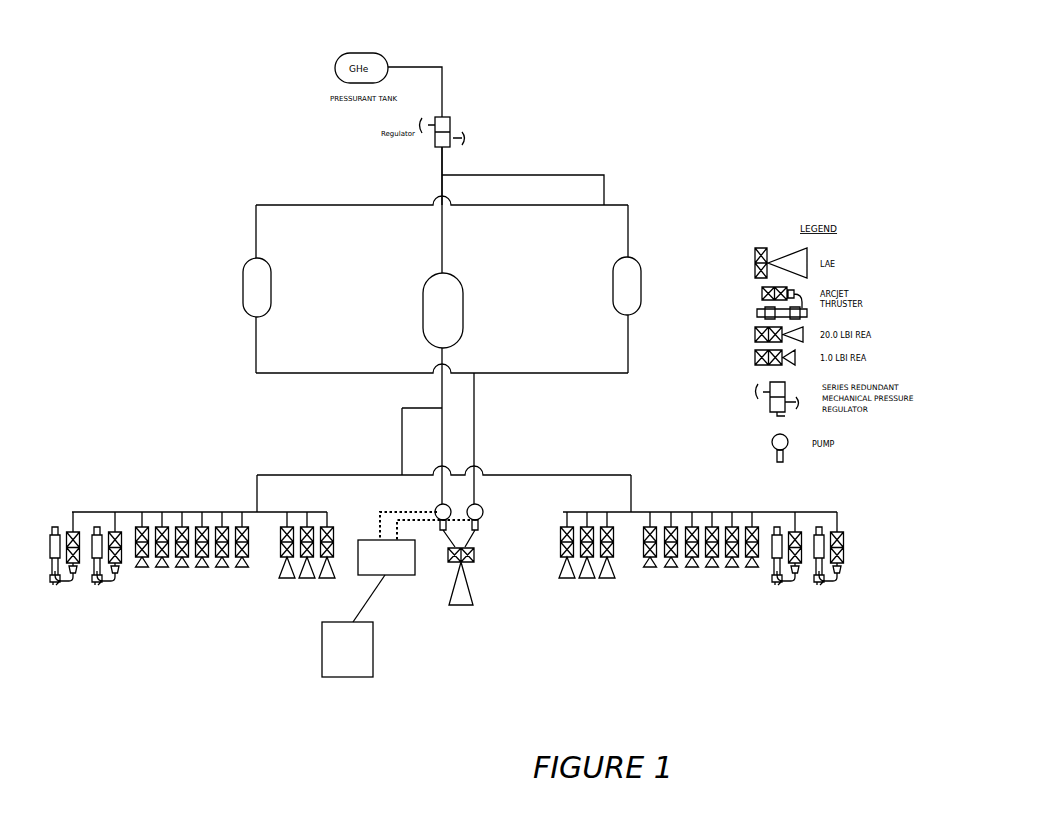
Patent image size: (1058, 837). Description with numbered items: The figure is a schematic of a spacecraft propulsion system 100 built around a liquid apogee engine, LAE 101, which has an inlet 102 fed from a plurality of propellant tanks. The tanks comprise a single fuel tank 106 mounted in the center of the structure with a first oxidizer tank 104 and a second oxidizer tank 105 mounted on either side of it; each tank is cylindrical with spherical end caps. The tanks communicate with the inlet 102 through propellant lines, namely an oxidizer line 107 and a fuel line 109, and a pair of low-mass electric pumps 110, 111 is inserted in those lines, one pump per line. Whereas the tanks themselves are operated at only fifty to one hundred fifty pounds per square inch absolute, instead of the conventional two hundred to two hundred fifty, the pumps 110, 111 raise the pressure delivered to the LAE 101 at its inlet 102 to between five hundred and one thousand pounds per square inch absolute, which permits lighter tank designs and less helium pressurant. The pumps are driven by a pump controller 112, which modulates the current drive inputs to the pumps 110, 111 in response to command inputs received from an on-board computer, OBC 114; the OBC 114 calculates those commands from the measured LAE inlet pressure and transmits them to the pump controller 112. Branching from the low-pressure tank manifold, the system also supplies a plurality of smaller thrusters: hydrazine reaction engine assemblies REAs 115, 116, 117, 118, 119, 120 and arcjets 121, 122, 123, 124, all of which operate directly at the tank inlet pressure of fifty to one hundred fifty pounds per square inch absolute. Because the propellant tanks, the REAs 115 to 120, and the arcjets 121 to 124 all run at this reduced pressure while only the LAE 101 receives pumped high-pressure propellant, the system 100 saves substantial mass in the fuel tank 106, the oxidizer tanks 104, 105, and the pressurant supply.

The propulsion system 100 is at (700, 60).
The LAE 101 is at (447, 595).
The inlet 102 is at (470, 540).
The oxidizer tank 104 is at (247, 303).
The oxidizer tank 105 is at (640, 305).
The fuel tank 106 is at (463, 280).
The oxidizer line 107 is at (545, 373).
The fuel line 109 is at (443, 392).
The low-mass electric pump 110 is at (437, 506).
The low-mass electric pump 111 is at (483, 508).
The pump controller 112 is at (398, 575).
The OBC 114 is at (333, 677).
The REA 115 is at (142, 568).
The REA 116 is at (182, 568).
The REA 117 is at (222, 568).
The REA 118 is at (287, 578).
The REA 119 is at (327, 578).
The REA 120 is at (568, 578).
The arcjet 121 is at (55, 585).
The arcjet 122 is at (97, 585).
The arcjet 123 is at (778, 582).
The arcjet 124 is at (833, 582).